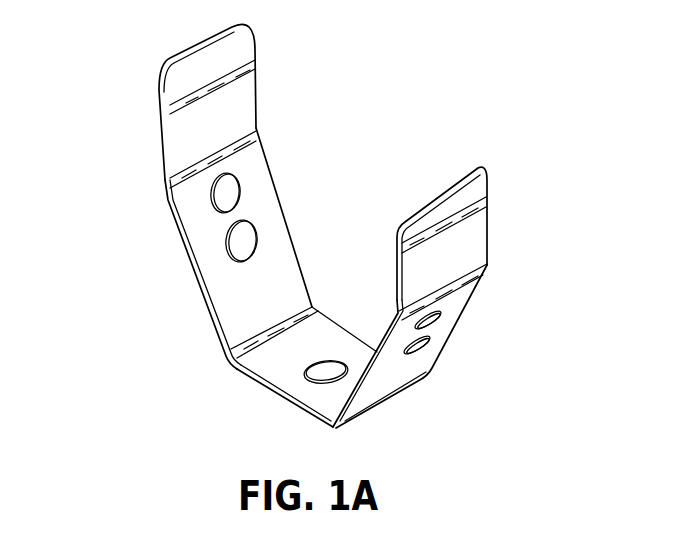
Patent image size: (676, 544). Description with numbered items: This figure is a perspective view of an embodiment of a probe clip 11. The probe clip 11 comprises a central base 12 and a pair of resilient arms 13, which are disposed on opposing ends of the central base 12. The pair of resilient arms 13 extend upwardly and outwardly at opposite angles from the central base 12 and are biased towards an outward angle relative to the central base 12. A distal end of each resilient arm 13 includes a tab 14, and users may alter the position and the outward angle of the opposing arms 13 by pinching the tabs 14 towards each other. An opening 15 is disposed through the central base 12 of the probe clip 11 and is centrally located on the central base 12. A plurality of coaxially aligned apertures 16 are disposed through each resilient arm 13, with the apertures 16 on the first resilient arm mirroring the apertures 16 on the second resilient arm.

The probe clip 11 is at (148, 64).
The central base 12 is at (277, 377).
The resilient arms 13 is at (270, 205).
The tab 14 is at (240, 57).
The opening 15 is at (327, 363).
The coaxially aligned apertures 16 is at (222, 199).